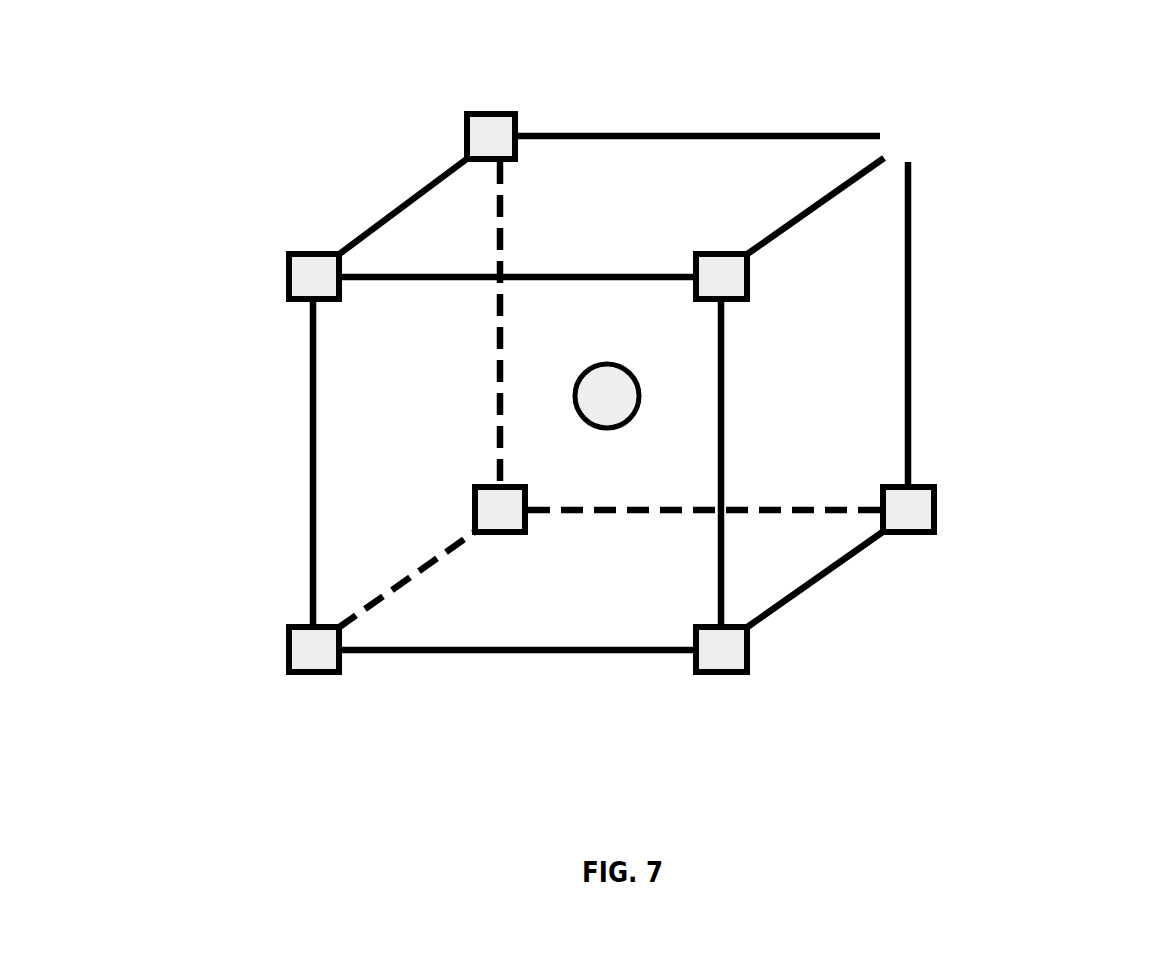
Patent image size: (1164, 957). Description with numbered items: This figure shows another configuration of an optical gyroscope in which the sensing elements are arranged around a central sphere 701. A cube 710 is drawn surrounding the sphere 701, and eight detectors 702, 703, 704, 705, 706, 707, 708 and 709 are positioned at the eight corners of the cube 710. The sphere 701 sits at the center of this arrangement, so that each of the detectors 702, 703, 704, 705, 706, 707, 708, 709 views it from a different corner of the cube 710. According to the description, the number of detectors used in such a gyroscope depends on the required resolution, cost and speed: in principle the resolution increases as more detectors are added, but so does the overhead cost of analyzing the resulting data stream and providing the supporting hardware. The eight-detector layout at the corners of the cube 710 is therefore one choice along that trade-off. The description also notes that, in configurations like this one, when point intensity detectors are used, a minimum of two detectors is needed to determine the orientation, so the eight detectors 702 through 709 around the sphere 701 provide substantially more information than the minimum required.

The sphere 701 is at (640, 410).
The detector 702 is at (918, 484).
The detector 703 is at (715, 676).
The detector 704 is at (722, 250).
The detector 705 is at (478, 110).
The detector 706 is at (300, 250).
The detector 707 is at (482, 484).
The detector 708 is at (298, 676).
The detector 709 is at (922, 163).
The cube 710 is at (727, 136).